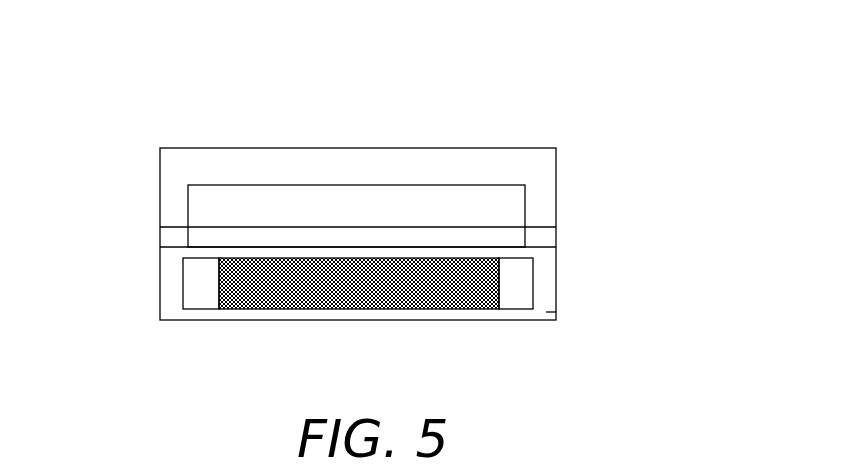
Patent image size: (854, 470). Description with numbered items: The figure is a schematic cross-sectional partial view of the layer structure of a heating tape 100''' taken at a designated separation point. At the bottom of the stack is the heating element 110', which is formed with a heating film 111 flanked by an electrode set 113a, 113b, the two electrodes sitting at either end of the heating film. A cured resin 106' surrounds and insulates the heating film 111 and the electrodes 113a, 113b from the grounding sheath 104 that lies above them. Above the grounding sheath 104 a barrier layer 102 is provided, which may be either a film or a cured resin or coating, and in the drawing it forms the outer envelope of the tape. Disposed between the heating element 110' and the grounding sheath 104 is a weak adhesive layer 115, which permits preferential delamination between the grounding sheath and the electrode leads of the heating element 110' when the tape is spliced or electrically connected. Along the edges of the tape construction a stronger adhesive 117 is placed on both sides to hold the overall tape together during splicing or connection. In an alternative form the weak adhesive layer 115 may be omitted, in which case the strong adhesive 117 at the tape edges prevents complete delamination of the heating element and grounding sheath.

The heating tape 100''' is at (667, 45).
The barrier layer 102 is at (533, 162).
The grounding sheath 104 is at (514, 203).
The weak adhesive layer 115 is at (343, 237).
The strong adhesive 117 is at (160, 235).
The heating element 110' is at (603, 281).
The cured resin 106' is at (600, 328).
The heating film 111 is at (183, 284).
The electrode 113a is at (201, 309).
The electrode 113b is at (514, 309).